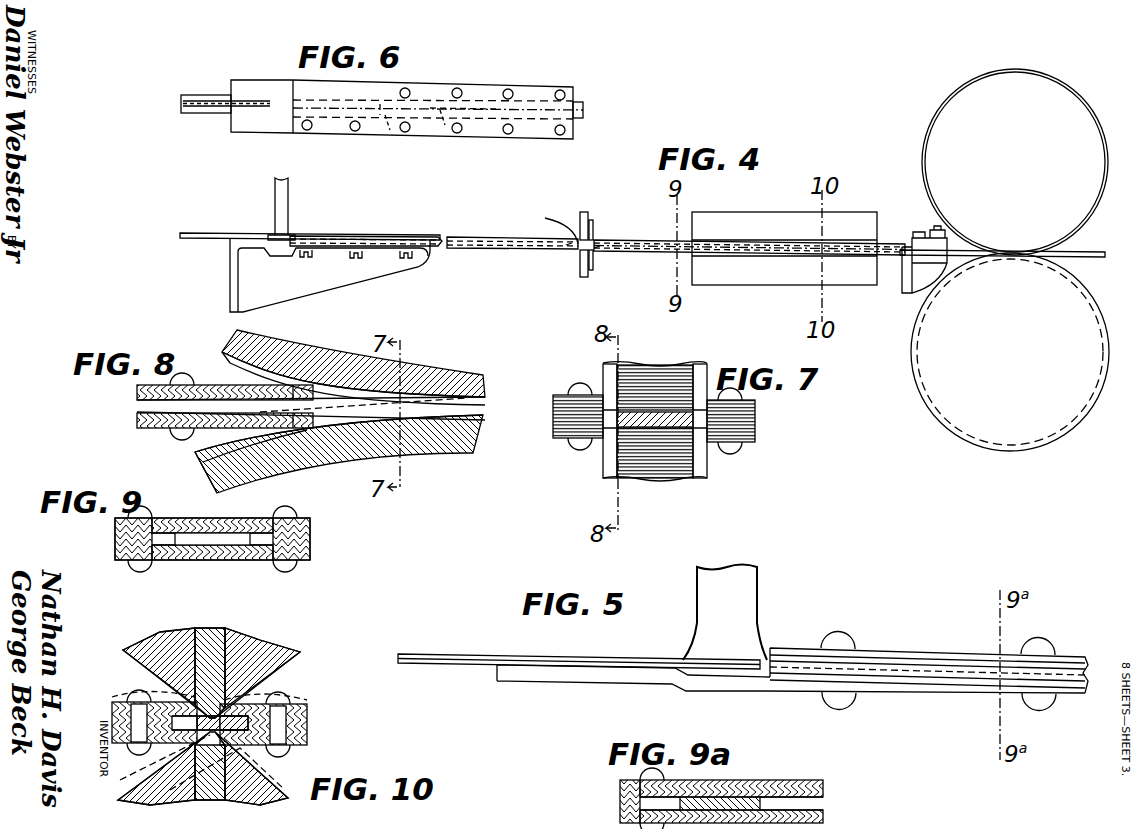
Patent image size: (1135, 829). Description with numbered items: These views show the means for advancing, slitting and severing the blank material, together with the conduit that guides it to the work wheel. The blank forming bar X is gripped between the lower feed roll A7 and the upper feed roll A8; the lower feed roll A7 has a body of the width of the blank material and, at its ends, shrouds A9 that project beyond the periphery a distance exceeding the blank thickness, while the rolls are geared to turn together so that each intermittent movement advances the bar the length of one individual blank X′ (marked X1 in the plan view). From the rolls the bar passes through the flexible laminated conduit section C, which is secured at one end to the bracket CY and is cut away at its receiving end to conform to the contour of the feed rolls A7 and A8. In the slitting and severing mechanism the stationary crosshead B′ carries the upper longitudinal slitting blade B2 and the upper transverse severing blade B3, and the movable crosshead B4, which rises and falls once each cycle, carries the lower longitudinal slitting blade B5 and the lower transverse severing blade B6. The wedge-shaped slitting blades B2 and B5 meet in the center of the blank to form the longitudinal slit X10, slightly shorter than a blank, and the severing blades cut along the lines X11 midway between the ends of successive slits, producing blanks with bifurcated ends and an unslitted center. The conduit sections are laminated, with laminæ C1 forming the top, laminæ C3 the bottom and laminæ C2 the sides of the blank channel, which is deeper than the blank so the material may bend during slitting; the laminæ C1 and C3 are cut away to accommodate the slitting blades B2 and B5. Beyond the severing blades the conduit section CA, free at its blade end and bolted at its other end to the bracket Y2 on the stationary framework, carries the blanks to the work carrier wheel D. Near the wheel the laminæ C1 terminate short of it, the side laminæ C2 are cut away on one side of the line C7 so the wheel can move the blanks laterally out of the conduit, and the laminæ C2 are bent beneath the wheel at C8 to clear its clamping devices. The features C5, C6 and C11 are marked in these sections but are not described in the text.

In FIG. 4, the blank forming bar X is at (1097, 253).
In FIG. 8, the blank forming bar X is at (470, 413).
In FIG. 7, the blank forming bar X is at (630, 412).
In FIG. 10, the blank forming bar X is at (200, 730).
In FIG. 9A, the blank forming bar X is at (745, 797).
In FIG. 6, the individual blank X′ is at (580, 108).
In FIG. 4, the individual blank X′ is at (234, 235).
In FIG. 5, the individual blank X′ is at (596, 660).
In FIG. 6, the individual blank X1 is at (275, 105).
In FIG. 6, the longitudinal slit X10 is at (445, 115).
In FIG. 6, the severing lines X11 is at (385, 118).
In FIG. 4, the conduit section C is at (640, 240).
In FIG. 7, the conduit section C is at (755, 420).
In FIG. 10, the conduit section C is at (307, 724).
In FIG. 6, the conduit section CA is at (520, 92).
In FIG. 4, the conduit section CA is at (440, 240).
In FIG. 5, the conduit section CA is at (933, 692).
In FIG. 9, the top laminæ C1 is at (212, 520).
In FIG. 5, the top laminæ C1 is at (800, 658).
In FIG. 9A, the top laminæ C1 is at (620, 782).
In FIG. 9, the side laminæ C2 is at (115, 542).
In FIG. 5, the side laminæ C2 is at (862, 665).
In FIG. 9, the bottom laminæ C3 is at (200, 560).
In FIG. 5, the bottom laminæ C3 is at (880, 680).
In FIG. 10, the recess C5 is at (190, 695).
In FIG. 4, the projection C6 is at (593, 252).
In FIG. 6, the line C7 is at (385, 90).
In FIG. 4, the line C7 is at (388, 240).
In FIG. 4, the bend C8 is at (285, 250).
In FIG. 5, the bend C8 is at (742, 690).
In FIG. 9, the housing C11 is at (285, 516).
In FIG. 10, the housing C11 is at (282, 712).
In FIG. 9A, the housing C11 is at (698, 798).
In FIG. 4, the bracket CY is at (935, 280).
In FIG. 10, the stationary crosshead B′ is at (262, 645).
In FIG. 4, the upper longitudinal slitting blade B2 is at (775, 200).
In FIG. 10, the upper longitudinal slitting blade B2 is at (215, 632).
In FIG. 4, the upper transverse severing blade B3 is at (590, 218).
In FIG. 10, the movable crosshead B4 is at (285, 780).
In FIG. 4, the lower longitudinal slitting blade B5 is at (773, 280).
In FIG. 10, the lower longitudinal slitting blade B5 is at (245, 780).
In FIG. 4, the lower transverse severing blade B6 is at (578, 268).
In FIG. 4, the lower feed roll A7 is at (1010, 352).
In FIG. 8, the lower feed roll A7 is at (336, 440).
In FIG. 7, the lower feed roll A7 is at (672, 478).
In FIG. 4, the upper feed roll A8 is at (1015, 162).
In FIG. 8, the upper feed roll A8 is at (308, 375).
In FIG. 7, the upper feed roll A8 is at (655, 372).
In FIG. 8, the shrouds A9 is at (247, 432).
In FIG. 7, the shrouds A9 is at (604, 448).
In FIG. 4, the work carrier wheel D is at (286, 200).
In FIG. 5, the work carrier wheel D is at (745, 590).
In FIG. 4, the bracket Y2 is at (380, 275).